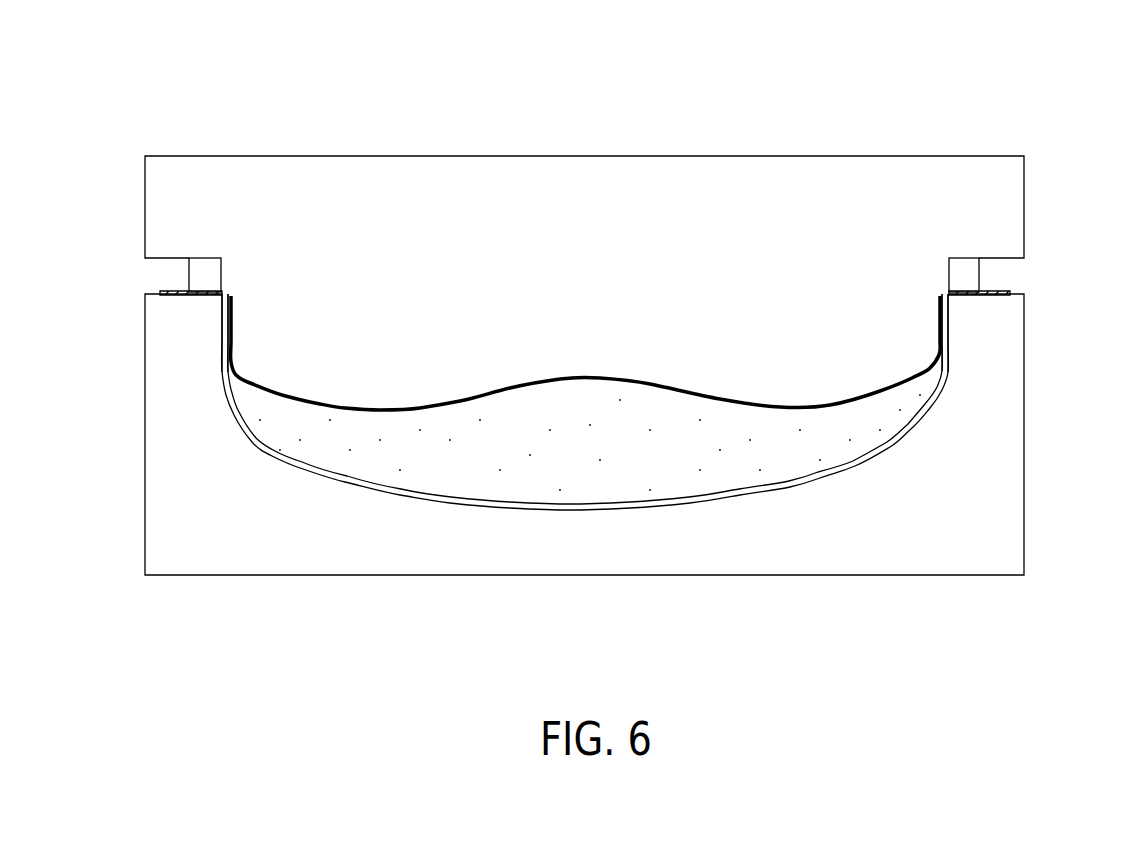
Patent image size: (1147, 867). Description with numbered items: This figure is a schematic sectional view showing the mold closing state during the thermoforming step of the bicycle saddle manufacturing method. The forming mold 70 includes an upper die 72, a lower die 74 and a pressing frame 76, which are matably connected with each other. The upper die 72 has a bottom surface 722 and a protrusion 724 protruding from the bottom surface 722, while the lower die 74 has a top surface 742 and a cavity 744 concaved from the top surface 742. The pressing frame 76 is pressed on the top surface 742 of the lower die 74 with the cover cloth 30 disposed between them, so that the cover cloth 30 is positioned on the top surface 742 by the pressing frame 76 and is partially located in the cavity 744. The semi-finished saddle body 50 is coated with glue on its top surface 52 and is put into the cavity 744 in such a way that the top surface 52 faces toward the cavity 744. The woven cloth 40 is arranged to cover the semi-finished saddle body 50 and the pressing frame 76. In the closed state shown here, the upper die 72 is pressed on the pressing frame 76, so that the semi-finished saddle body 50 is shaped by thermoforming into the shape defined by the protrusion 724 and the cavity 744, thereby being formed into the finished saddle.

The forming mold 70 is at (622, 100).
The upper die 72 is at (968, 154).
The lower die 74 is at (145, 491).
The pressing frame 76 is at (205, 268).
The bottom surface 722 is at (1003, 261).
The protrusion 724 is at (918, 330).
The top surface 742 is at (156, 294).
The cavity 744 is at (233, 415).
The woven cloth 40 is at (820, 405).
The cover cloth 30 is at (704, 503).
The top surface 52 is at (615, 510).
The semi-finished saddle body 50 is at (791, 450).